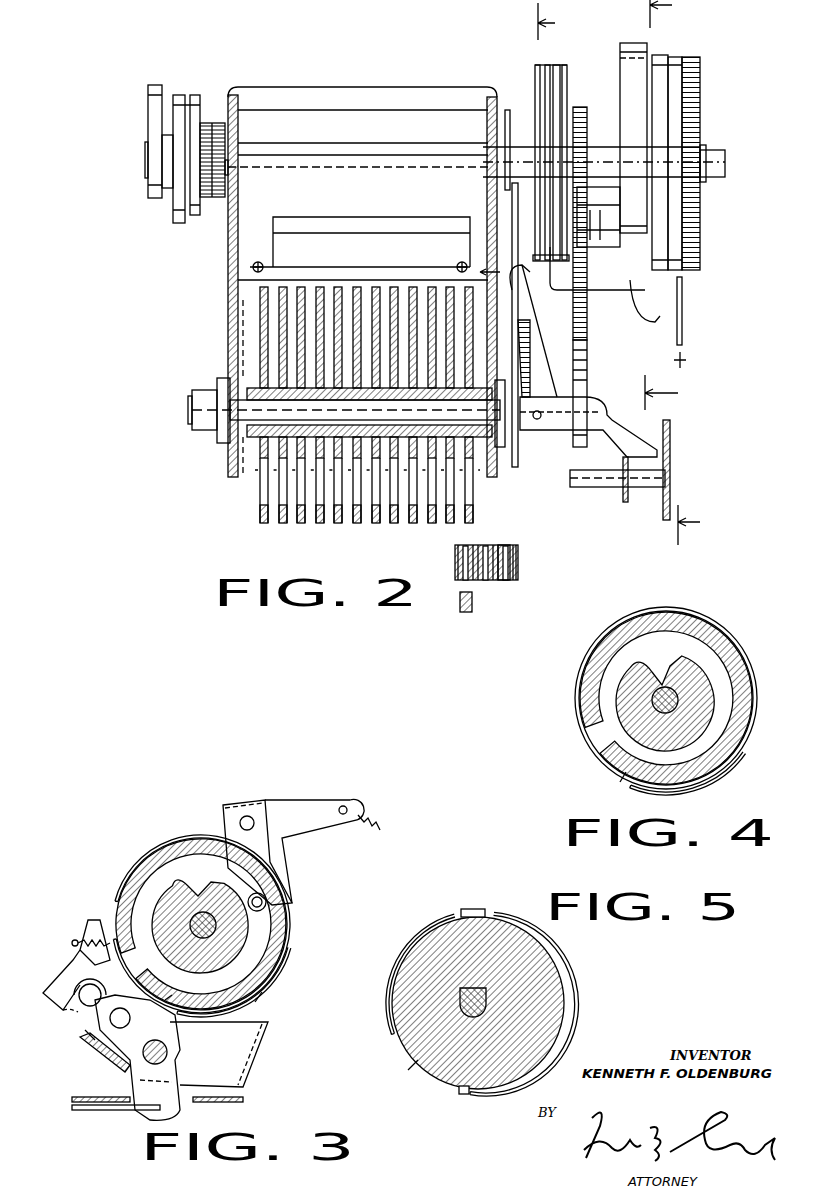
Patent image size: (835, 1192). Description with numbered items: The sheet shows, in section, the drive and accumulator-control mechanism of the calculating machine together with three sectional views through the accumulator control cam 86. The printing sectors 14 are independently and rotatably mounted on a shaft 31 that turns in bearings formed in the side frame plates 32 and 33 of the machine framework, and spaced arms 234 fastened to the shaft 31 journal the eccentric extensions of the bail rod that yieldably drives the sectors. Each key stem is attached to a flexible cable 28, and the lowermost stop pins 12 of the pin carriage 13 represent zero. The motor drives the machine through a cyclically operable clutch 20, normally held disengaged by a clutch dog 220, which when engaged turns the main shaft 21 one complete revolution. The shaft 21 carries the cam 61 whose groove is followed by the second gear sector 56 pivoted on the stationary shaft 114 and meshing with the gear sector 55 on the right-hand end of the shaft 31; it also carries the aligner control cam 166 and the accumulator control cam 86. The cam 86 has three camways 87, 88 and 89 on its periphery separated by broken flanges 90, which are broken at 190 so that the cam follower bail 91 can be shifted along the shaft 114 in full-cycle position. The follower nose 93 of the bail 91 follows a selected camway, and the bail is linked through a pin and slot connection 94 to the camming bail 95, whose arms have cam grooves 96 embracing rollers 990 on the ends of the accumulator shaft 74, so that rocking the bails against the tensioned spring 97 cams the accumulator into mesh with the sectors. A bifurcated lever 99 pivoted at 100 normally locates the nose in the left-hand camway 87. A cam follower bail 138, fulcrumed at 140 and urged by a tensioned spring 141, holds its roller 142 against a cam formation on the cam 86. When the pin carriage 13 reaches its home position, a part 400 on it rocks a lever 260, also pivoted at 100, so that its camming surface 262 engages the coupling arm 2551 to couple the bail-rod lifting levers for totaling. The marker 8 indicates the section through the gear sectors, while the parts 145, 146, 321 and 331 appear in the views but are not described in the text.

In FIG. 2, the camming bail 95 is at (366, 86).
In FIG. 3, the camming bail 95 is at (250, 1070).
In FIG. 2, the side frame plate 32 is at (232, 470).
In FIG. 2, the shaft 31 is at (243, 480).
In FIG. 2, the side frame plate 33 is at (492, 478).
In FIG. 2, the bracket 145 is at (357, 217).
In FIG. 2, the support bar 146 is at (363, 268).
In FIG. 2, the printing sectors 14 is at (310, 522).
In FIG. 2, the spaced arms 234 is at (222, 378).
In FIG. 2, the aligner control cam 166 is at (178, 216).
In FIG. 2, the broken flanges 90 is at (540, 80).
In FIG. 4, the broken flanges 90 is at (755, 690).
In FIG. 3, the broken flanges 90 is at (290, 926).
In FIG. 5, the broken flanges 90 is at (556, 955).
In FIG. 2, the left-hand camway 87 is at (547, 100).
In FIG. 4, the left-hand camway 87 is at (747, 665).
In FIG. 2, the camway 88 is at (555, 108).
In FIG. 3, the camway 88 is at (291, 948).
In FIG. 2, the camway 89 is at (566, 95).
In FIG. 5, the camway 89 is at (466, 908).
In FIG. 2, the accumulator control cam 86 is at (578, 62).
In FIG. 4, the accumulator control cam 86 is at (744, 775).
In FIG. 3, the accumulator control cam 86 is at (291, 977).
In FIG. 5, the accumulator control cam 86 is at (577, 1037).
In FIG. 2, the main shaft 21 is at (712, 152).
In FIG. 4, the main shaft 21 is at (664, 690).
In FIG. 3, the main shaft 21 is at (203, 912).
In FIG. 5, the main shaft 21 is at (486, 1000).
In FIG. 2, the second gear sector 56 is at (588, 320).
In FIG. 2, the gear sector 55 is at (588, 355).
In FIG. 2, the stationary shaft 114 is at (603, 243).
In FIG. 3, the stationary shaft 114 is at (180, 1040).
In FIG. 2, the cam 61 is at (620, 42).
In FIG. 2, the clutch 20 is at (694, 52).
In FIG. 2, the clutch dog 220 is at (684, 290).
In FIG. 2, the cam follower bail 91 is at (635, 310).
In FIG. 3, the cam follower bail 91 is at (82, 1060).
In FIG. 2, the coupling arm 2551 is at (538, 297).
In FIG. 2, the camming surface 262 is at (532, 322).
In FIG. 2, the lever 260 is at (600, 395).
In FIG. 2, the pivot 100 is at (537, 420).
In FIG. 2, the rod 331 is at (572, 487).
In FIG. 2, the part 400 is at (620, 504).
In FIG. 2, the section line 8 is at (663, 394).
In FIG. 2, the pin carriage 13 is at (513, 537).
In FIG. 2, the strip 321 is at (520, 562).
In FIG. 2, the stop pins 12 is at (505, 583).
In FIG. 2, the flexible cable 28 is at (470, 612).
In FIG. 4, the break in flanges 190 is at (620, 782).
In FIG. 3, the break in flanges 190 is at (255, 1002).
In FIG. 5, the break in flanges 190 is at (410, 1070).
In FIG. 3, the fulcrum 140 is at (250, 815).
In FIG. 3, the cam follower bail 138 is at (313, 800).
In FIG. 3, the tensioned spring 141 is at (380, 814).
In FIG. 3, the roller 142 is at (266, 900).
In FIG. 3, the tensioned spring 97 is at (78, 925).
In FIG. 3, the accumulator shaft 74 is at (92, 975).
In FIG. 3, the cam grooves 96 is at (62, 1010).
In FIG. 3, the rollers 990 is at (75, 1028).
In FIG. 3, the pin and slot connection 94 is at (92, 1043).
In FIG. 3, the bifurcated lever 99 is at (80, 1110).
In FIG. 3, the follower nose 93 is at (170, 998).